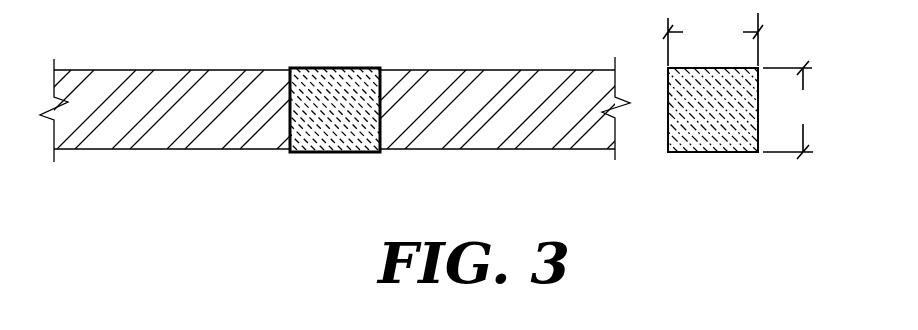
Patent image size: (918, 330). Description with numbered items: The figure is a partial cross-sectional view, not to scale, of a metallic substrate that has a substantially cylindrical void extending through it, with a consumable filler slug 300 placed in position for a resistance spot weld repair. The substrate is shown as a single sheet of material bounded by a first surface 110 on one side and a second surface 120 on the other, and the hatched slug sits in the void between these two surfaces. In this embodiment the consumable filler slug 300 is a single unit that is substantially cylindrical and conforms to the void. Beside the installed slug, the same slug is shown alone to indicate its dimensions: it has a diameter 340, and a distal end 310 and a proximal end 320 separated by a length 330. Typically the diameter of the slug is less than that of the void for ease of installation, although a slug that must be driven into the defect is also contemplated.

The first surface 110 is at (412, 70).
The second surface 120 is at (410, 149).
The consumable filler slug 300 is at (293, 151).
The distal end 310 is at (758, 68).
The proximal end 320 is at (700, 152).
The length 330 is at (799, 110).
The diameter 340 is at (713, 34).